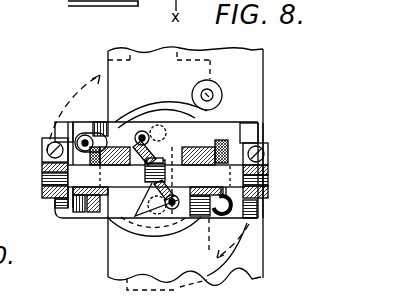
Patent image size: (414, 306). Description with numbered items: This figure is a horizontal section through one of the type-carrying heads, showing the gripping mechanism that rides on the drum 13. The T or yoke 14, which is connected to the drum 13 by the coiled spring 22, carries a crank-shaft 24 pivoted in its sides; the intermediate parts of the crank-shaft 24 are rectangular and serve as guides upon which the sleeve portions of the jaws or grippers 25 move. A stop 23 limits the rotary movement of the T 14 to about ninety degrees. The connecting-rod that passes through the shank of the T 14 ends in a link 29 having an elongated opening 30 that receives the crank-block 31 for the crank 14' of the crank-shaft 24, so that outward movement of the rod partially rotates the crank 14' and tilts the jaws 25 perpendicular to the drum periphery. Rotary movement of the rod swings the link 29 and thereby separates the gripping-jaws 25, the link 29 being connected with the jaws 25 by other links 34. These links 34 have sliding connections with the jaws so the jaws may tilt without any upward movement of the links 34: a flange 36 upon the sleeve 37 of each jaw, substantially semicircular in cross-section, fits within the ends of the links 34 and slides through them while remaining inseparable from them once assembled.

The drum 13 is at (265, 76).
The T or yoke 14 is at (186, 179).
The crank 14' is at (197, 179).
The coiled spring 22 is at (152, 110).
The stop 23 is at (212, 89).
The crank-shaft 24 is at (268, 182).
The jaws or grippers 25 is at (38, 278).
The link 29 is at (163, 149).
The elongated opening 30 is at (148, 186).
The crank-block 31 is at (148, 167).
The links 34 is at (110, 127).
The flange 36 is at (88, 136).
The sleeve 37 is at (107, 220).